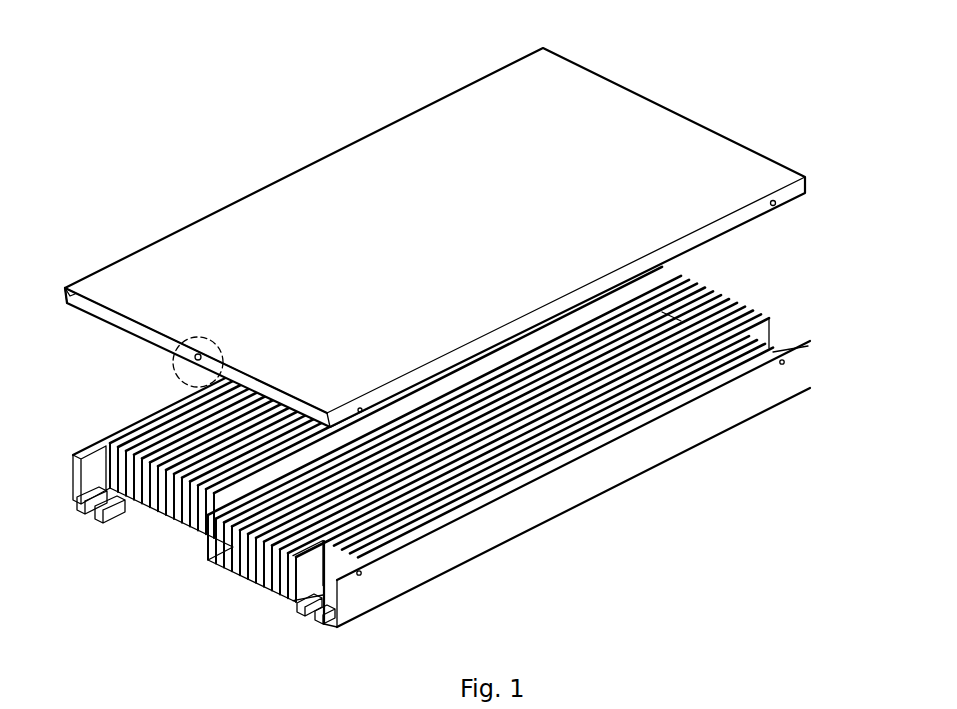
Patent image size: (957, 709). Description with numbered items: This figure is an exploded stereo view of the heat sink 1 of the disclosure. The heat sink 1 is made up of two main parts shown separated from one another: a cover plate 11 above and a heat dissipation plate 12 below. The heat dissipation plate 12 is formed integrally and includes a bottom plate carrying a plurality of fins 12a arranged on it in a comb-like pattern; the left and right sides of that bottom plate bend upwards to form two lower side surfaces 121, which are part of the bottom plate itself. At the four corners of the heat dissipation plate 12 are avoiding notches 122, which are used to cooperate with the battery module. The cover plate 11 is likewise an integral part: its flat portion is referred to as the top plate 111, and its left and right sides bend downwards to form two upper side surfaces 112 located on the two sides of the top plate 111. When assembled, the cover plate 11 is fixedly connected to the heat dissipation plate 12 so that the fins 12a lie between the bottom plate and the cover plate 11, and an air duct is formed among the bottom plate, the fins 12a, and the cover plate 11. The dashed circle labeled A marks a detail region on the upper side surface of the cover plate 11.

The heat sink 1 is at (133, 86).
The cover plate 11 is at (445, 237).
The top plate 111 is at (710, 150).
The upper side surface 112 is at (723, 222).
The heat dissipation plate 12 is at (460, 427).
The fin 12a is at (212, 548).
The lower side surface 121 is at (503, 523).
The avoiding notch 122 is at (80, 506).
The detail region A is at (172, 362).